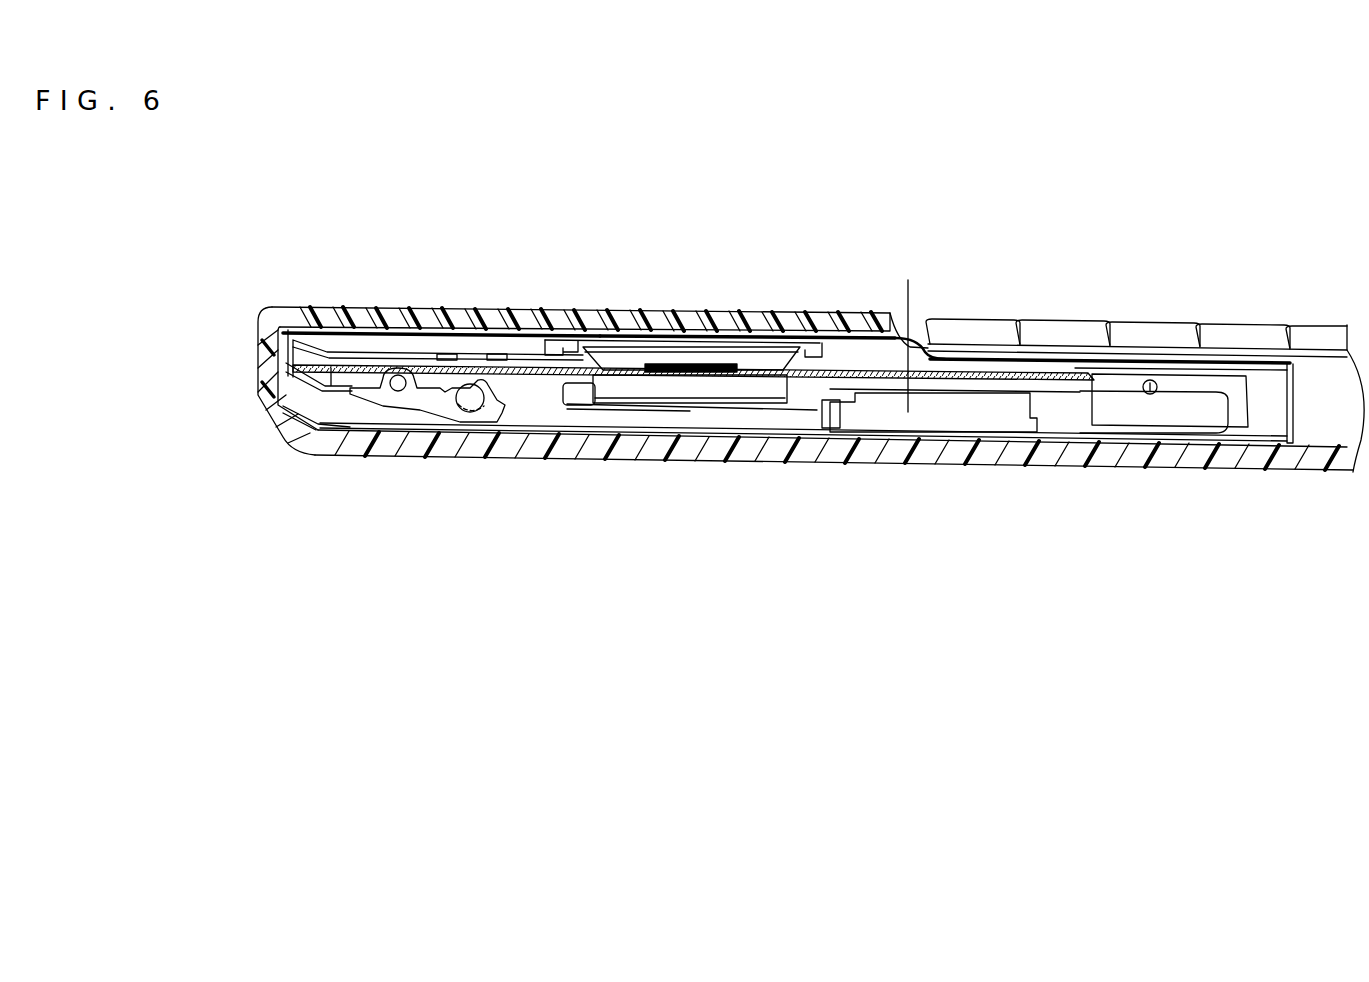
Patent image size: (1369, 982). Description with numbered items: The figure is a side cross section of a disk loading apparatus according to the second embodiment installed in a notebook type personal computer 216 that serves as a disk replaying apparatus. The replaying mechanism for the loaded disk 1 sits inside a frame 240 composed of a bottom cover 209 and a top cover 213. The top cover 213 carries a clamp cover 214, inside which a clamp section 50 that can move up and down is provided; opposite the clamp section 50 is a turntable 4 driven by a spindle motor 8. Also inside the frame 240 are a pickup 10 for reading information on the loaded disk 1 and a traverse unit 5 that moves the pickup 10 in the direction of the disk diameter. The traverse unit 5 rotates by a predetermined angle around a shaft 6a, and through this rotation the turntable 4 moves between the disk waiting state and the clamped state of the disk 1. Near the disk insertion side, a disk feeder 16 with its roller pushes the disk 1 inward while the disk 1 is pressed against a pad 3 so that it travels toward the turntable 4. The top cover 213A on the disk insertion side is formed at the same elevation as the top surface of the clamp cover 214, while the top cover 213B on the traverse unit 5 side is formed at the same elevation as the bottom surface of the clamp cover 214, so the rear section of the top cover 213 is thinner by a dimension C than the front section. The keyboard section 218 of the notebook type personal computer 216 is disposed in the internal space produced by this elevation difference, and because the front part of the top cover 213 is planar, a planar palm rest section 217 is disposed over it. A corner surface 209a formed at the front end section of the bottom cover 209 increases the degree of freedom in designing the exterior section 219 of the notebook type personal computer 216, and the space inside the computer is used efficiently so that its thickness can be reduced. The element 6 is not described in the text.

The disk 1 is at (857, 362).
The pad 3 is at (498, 353).
The turntable 4 is at (615, 375).
The traverse unit 5 is at (1108, 410).
The battery holder 6 is at (1232, 382).
The shaft 6a is at (1153, 395).
The spindle motor 8 is at (718, 395).
The pickup 10 is at (917, 412).
The disk feeder 16 is at (432, 405).
The clamp section 50 is at (640, 352).
The bottom cover 209 is at (590, 455).
The corner surface 209a is at (292, 440).
The top cover 213 is at (532, 333).
The top cover on the disk insertion side 213A is at (417, 335).
The top cover on the traverse unit side 213B is at (1058, 360).
The clamp cover 214 is at (581, 342).
The notebook type personal computer 216 is at (1312, 428).
The palm rest section 217 is at (410, 322).
The keyboard section 218 is at (1143, 330).
The exterior section 219 is at (262, 412).
The frame 240 is at (351, 321).
The dimension C is at (905, 345).